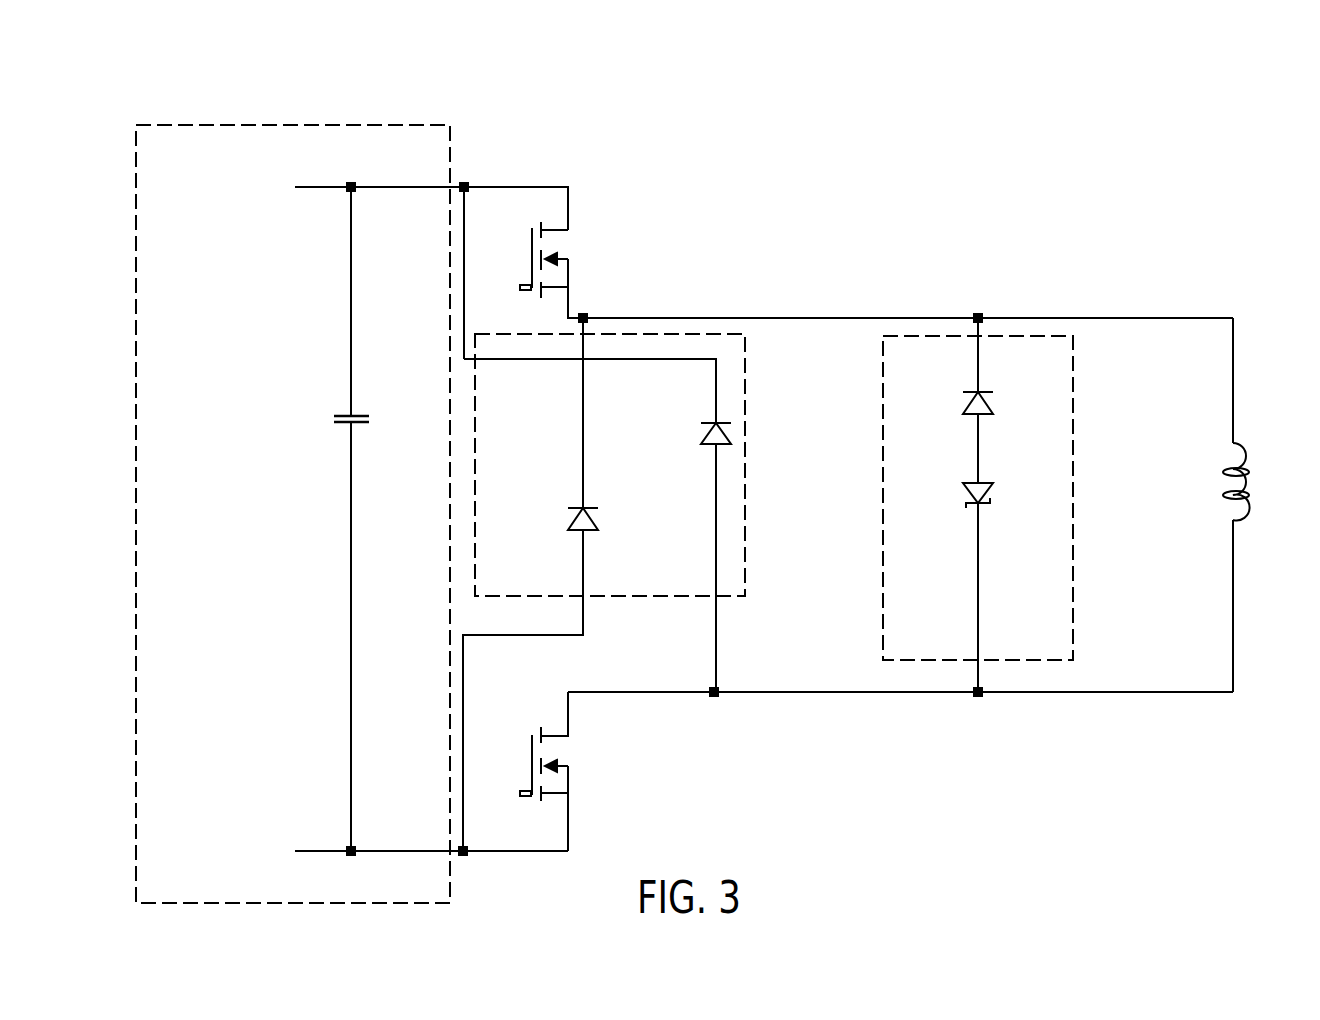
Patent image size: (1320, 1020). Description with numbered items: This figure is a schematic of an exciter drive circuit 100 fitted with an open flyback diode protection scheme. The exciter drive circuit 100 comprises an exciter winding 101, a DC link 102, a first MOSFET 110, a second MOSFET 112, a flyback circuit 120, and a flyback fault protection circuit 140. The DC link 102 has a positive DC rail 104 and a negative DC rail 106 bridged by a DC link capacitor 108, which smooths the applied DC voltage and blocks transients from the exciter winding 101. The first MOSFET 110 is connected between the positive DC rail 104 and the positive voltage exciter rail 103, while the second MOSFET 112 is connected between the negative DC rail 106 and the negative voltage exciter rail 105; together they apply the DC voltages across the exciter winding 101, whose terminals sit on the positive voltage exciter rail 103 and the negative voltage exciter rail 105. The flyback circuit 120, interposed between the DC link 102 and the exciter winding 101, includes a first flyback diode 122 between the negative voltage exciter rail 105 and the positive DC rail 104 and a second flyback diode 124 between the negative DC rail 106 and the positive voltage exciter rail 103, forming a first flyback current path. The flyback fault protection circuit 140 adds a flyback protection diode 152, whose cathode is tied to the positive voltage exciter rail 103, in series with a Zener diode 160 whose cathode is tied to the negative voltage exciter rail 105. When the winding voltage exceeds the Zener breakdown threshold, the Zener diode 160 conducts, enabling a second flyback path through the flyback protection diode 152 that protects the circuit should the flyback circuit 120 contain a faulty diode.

The exciter drive circuit 100 is at (838, 155).
The exciter winding 101 is at (1245, 446).
The DC link 102 is at (301, 116).
The positive voltage exciter rail 103 is at (863, 316).
The positive DC rail 104 is at (322, 189).
The negative voltage exciter rail 105 is at (832, 695).
The negative DC rail 106 is at (325, 849).
The DC link capacitor 108 is at (340, 415).
The first MOSFET 110 is at (530, 242).
The second MOSFET 112 is at (530, 748).
The flyback circuit 120 is at (660, 604).
The first flyback diode 122 is at (706, 448).
The second flyback diode 124 is at (572, 533).
The flyback fault protection circuit 140 is at (876, 451).
The flyback protection diode 152 is at (965, 411).
The Zener diode 160 is at (965, 492).